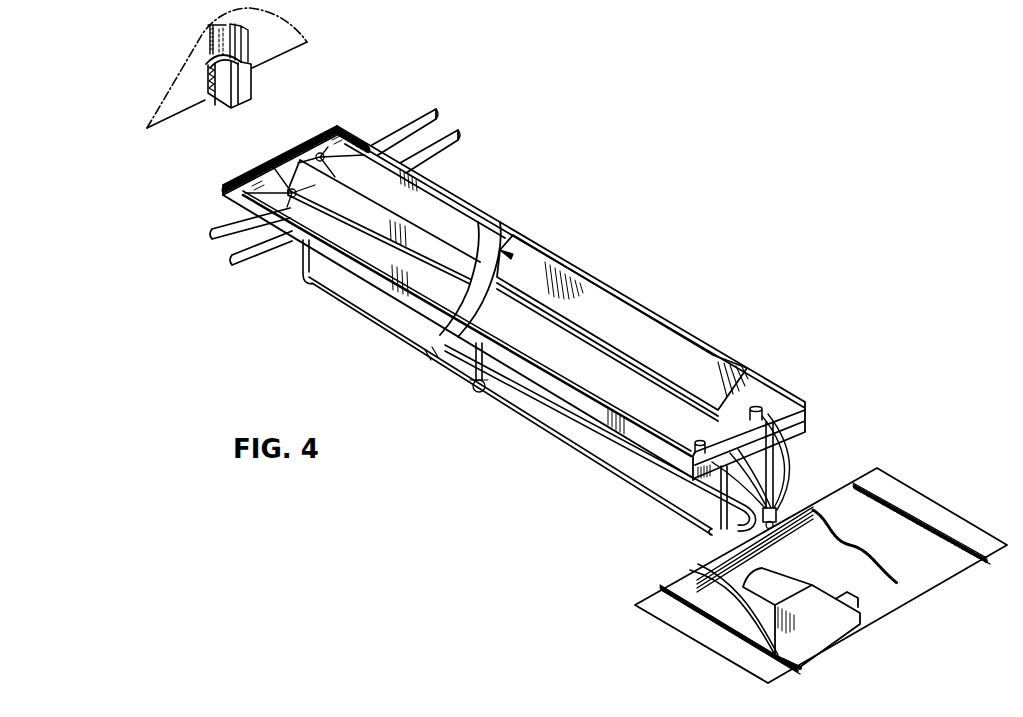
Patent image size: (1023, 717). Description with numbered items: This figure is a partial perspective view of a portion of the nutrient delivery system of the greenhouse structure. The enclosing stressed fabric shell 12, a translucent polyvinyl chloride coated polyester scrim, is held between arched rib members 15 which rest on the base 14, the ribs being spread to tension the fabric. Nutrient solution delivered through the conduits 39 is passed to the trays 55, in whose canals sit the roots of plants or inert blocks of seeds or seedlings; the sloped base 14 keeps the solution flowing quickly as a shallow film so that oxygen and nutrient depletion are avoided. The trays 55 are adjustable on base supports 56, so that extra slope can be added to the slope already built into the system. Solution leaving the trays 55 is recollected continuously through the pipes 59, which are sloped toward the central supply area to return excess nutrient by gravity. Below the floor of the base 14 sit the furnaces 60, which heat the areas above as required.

The stressed fabric shell 12 is at (283, 50).
The base 14 is at (492, 156).
The arched rib members 15 is at (249, 92).
The nutrient delivery conduits 39 is at (712, 572).
The trays 55 is at (538, 377).
The base supports 56 is at (300, 270).
The pipes 59 is at (440, 108).
The furnaces 60 is at (807, 637).